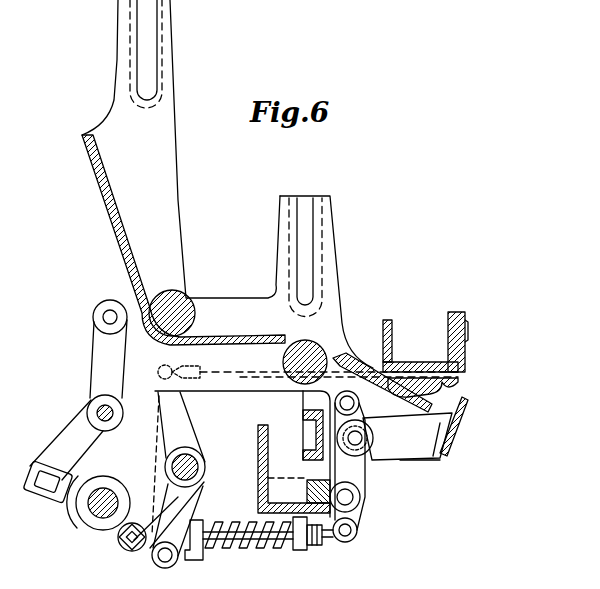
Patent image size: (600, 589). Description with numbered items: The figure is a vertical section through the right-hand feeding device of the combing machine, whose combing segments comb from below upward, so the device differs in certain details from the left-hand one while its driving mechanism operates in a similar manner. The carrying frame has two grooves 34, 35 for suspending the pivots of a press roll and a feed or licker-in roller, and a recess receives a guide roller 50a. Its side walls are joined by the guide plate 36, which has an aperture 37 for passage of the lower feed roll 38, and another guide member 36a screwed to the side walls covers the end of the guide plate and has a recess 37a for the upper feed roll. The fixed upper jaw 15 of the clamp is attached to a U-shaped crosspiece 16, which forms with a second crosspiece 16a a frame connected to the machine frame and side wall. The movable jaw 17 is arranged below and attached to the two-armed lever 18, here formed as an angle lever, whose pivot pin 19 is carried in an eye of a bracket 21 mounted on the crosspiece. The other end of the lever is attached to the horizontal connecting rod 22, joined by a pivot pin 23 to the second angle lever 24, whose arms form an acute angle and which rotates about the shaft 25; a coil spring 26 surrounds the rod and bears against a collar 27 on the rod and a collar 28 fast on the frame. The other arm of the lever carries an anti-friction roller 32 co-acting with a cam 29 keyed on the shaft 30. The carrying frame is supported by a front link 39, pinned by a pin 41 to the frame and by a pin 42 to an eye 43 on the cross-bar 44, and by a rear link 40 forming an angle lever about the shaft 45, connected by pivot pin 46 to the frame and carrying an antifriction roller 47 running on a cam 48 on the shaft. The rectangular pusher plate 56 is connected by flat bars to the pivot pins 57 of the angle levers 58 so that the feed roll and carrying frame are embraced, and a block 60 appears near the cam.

The groove 35 is at (148, 76).
The guide plate 36 is at (138, 275).
The guide roller 50a is at (184, 302).
The groove 34 is at (307, 252).
The aperture 37 is at (340, 320).
The lower feed roll 38 is at (290, 360).
The pivot pin 57 is at (172, 368).
The pusher plate 56 is at (376, 362).
The guide member 36a is at (410, 360).
The crosspiece 16 is at (451, 320).
The upper jaw 15 is at (466, 340).
The recess 37a is at (448, 386).
The second crosspiece 16a is at (303, 434).
The cross-bar 44 is at (272, 466).
The pin 41 is at (345, 400).
The pivot pin 19 is at (358, 430).
The pin 42 is at (361, 497).
The eye 43 is at (340, 540).
The bracket 21 is at (352, 447).
The front link 39 is at (362, 474).
The two-armed lever 18 is at (400, 460).
The movable jaw 17 is at (462, 420).
The pivot pin 46 is at (93, 330).
The shaft 45 is at (116, 413).
The rear link 40 is at (78, 425).
The antifriction roller 47 is at (52, 496).
The cam 48 is at (96, 484).
The shaft 30 is at (104, 520).
The angle lever 58 is at (188, 426).
The shaft 25 is at (205, 460).
The two-armed lever 24 is at (178, 500).
The pivot pin 23 is at (172, 562).
The cam 29 is at (126, 546).
The block 60 is at (134, 555).
The anti-friction roller 32 is at (140, 555).
The collar 27 is at (200, 556).
The connecting rod 22 is at (240, 530).
The coil spring 26 is at (250, 548).
The collar 28 is at (300, 550).